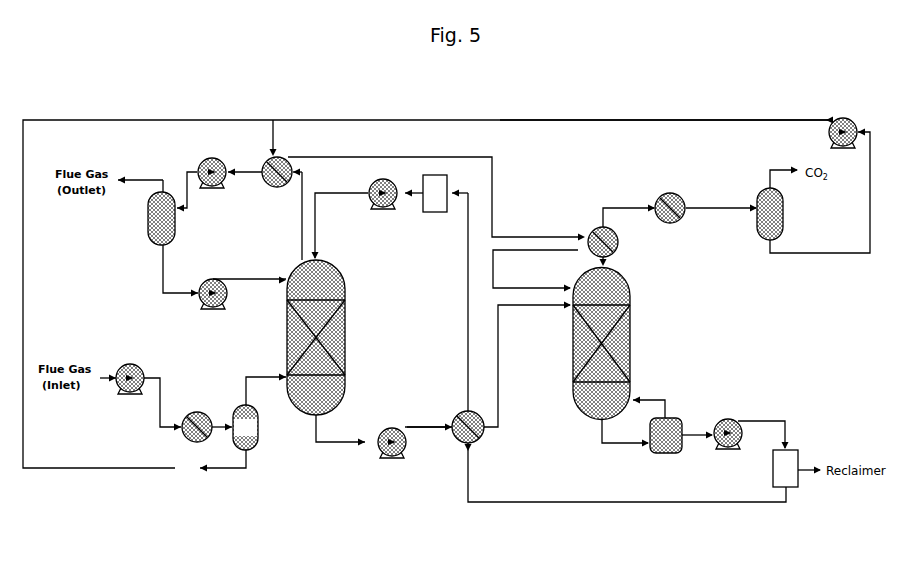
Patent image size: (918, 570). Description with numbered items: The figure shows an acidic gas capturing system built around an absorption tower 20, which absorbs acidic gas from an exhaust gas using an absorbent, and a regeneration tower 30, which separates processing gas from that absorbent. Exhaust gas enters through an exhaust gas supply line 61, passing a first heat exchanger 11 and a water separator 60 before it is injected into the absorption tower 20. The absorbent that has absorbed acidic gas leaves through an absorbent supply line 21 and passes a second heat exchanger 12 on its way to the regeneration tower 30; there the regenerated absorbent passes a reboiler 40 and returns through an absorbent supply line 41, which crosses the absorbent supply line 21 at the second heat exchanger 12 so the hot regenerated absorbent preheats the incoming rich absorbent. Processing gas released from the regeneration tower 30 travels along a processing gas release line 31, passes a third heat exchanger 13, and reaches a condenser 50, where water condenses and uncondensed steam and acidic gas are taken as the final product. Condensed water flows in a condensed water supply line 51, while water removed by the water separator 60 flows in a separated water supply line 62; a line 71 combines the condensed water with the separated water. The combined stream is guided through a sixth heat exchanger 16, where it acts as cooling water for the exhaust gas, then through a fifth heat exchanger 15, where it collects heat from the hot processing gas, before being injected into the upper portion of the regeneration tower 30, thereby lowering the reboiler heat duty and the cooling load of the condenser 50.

The first heat exchanger 11 is at (186, 440).
The second heat exchanger 12 is at (458, 442).
The third heat exchanger 13 is at (674, 194).
The fifth heat exchanger 15 is at (615, 252).
The sixth heat exchanger 16 is at (288, 155).
The absorption tower 20 is at (345, 328).
The absorbent supply line 21 is at (432, 421).
The regeneration tower 30 is at (630, 345).
The processing gas release line 31 is at (600, 205).
The reboiler 40 is at (652, 453).
The absorbent supply line 41 is at (510, 505).
The condenser 50 is at (785, 228).
The condensed water supply line 51 is at (756, 118).
The water separator 60 is at (258, 440).
The exhaust gas supply line 61 is at (244, 377).
The separated water supply line 62 is at (40, 470).
The line 71 is at (266, 140).